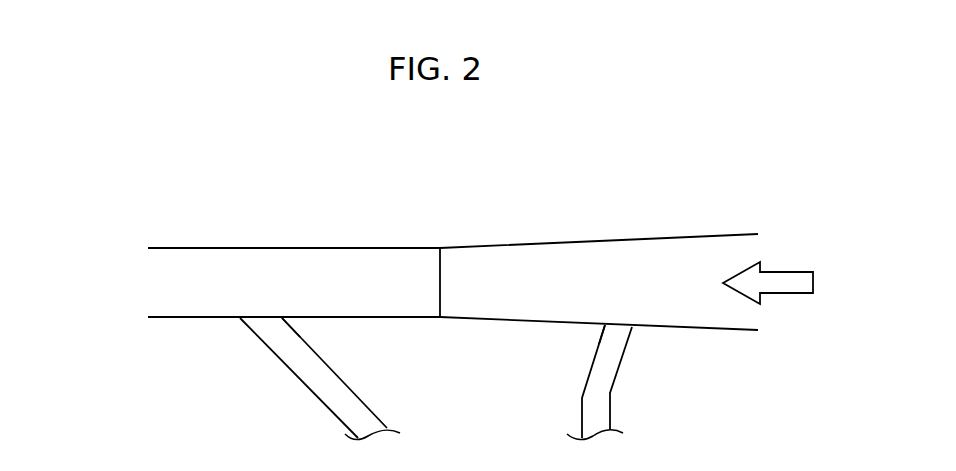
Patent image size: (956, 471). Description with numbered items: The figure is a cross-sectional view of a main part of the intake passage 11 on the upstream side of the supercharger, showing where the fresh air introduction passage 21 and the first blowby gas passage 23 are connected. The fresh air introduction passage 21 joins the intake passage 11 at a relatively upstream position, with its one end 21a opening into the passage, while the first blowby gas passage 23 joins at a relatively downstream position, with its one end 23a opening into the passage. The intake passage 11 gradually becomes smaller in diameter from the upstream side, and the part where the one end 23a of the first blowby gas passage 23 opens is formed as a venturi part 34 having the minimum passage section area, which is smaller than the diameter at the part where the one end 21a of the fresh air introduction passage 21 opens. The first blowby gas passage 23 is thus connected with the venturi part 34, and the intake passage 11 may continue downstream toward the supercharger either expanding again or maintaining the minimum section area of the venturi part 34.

The intake passage 11 is at (408, 263).
The venturi part 34 is at (313, 248).
The fresh air introduction passage 21 is at (605, 415).
The one end of the fresh air introduction passage 21a is at (613, 342).
The first blowby gas passage 23 is at (352, 410).
The one end of the first blowby gas passage 23a is at (278, 335).